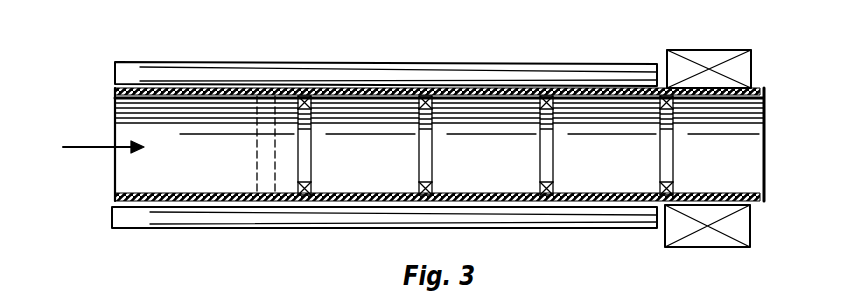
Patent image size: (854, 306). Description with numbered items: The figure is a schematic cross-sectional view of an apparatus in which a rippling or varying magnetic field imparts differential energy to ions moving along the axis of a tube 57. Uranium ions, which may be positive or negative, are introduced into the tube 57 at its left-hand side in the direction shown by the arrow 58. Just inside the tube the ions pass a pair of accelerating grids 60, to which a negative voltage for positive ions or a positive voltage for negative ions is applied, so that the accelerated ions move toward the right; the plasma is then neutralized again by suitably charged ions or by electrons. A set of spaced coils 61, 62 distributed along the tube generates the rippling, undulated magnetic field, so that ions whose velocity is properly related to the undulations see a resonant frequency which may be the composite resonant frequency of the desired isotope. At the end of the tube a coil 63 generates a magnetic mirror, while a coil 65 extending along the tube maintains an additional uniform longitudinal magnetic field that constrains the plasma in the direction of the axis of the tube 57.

The tube 57 is at (115, 172).
The arrow 58 is at (87, 146).
The accelerating grids 60 is at (267, 194).
The spaced coil 61 is at (303, 94).
The spaced coil 62 is at (430, 94).
The coil 63 is at (703, 50).
The coil 65 is at (505, 63).